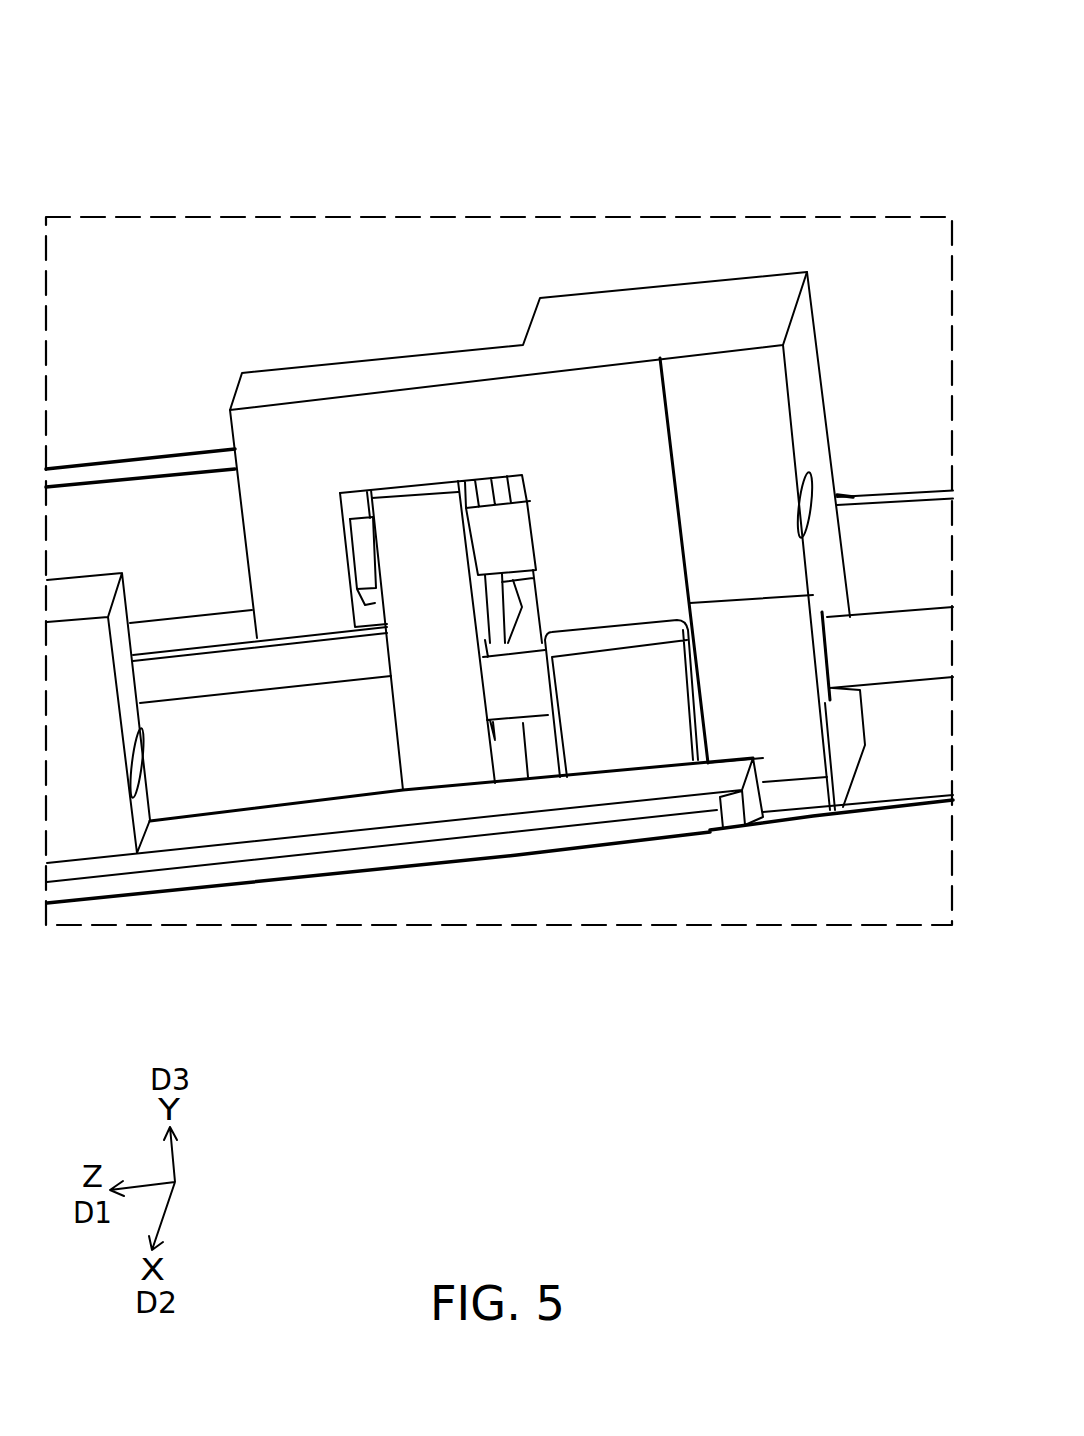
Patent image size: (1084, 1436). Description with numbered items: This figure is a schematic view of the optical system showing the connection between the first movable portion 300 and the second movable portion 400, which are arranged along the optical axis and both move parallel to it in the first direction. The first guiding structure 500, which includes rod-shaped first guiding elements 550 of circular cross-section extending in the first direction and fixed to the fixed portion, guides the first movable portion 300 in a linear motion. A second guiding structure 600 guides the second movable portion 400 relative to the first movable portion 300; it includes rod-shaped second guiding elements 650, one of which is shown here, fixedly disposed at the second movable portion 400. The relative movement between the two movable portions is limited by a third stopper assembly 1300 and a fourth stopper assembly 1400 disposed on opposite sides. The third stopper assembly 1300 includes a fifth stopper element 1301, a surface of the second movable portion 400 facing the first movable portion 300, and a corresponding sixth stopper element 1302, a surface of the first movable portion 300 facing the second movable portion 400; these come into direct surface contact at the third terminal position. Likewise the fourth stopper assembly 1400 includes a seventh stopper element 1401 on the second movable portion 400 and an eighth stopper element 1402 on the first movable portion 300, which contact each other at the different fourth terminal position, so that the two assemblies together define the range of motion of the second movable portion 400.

The first movable portion 300 is at (252, 769).
The second movable portion 400 is at (746, 388).
The first guiding structure 500 is at (855, 772).
The first guiding element 550 is at (893, 660).
The second guiding structure 600 is at (540, 535).
The second guiding element 650 is at (499, 524).
The third stopper assembly 1300 is at (171, 0).
The fifth stopper element 1301 is at (533, 537).
The sixth stopper element 1302 is at (485, 498).
The fourth stopper assembly 1400 is at (171, 90).
The seventh stopper element 1401 is at (352, 500).
The eighth stopper element 1402 is at (362, 555).